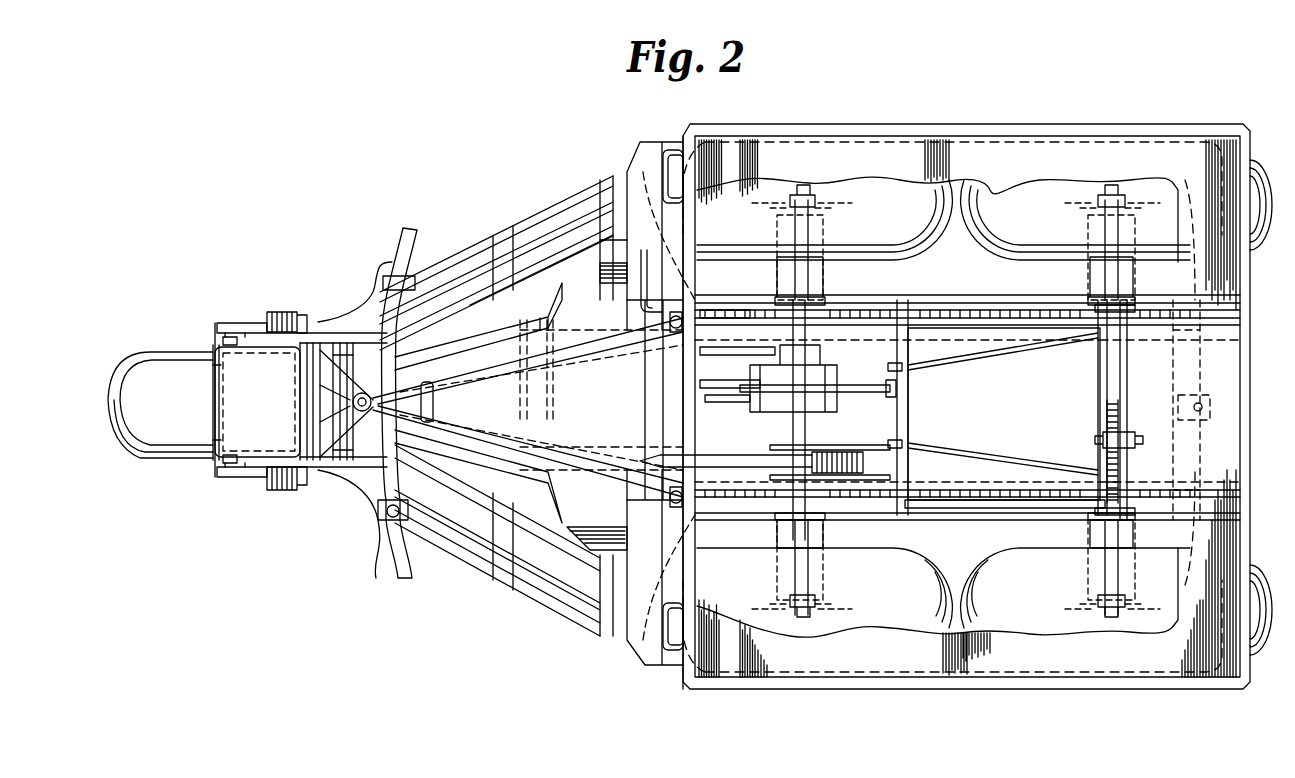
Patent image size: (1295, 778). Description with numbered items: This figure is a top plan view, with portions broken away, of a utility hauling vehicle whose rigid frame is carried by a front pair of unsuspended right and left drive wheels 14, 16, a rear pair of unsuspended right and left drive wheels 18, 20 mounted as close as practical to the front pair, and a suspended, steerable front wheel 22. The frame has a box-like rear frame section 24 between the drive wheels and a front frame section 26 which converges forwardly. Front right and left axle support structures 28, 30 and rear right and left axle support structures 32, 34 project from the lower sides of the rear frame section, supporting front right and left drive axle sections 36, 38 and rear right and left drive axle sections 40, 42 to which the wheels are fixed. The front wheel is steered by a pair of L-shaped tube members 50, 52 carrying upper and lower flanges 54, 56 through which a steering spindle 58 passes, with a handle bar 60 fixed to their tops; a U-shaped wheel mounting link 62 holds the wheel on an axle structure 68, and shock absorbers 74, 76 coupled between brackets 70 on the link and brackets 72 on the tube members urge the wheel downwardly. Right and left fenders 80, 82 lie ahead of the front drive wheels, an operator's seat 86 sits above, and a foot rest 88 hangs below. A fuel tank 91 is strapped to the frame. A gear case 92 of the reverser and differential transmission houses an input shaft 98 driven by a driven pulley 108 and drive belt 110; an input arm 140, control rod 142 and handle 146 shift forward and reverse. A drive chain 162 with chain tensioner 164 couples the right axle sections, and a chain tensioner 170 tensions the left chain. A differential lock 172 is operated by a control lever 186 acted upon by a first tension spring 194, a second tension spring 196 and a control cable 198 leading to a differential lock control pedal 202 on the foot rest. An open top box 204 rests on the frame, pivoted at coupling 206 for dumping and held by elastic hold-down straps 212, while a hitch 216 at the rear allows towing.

The right front drive wheel 14 is at (915, 214).
The left front drive wheel 16 is at (915, 621).
The right rear drive wheel 18 is at (1024, 221).
The left rear drive wheel 20 is at (1003, 621).
The front wheel 22 is at (170, 399).
The rear frame section 24 is at (1030, 298).
The front frame section 26 is at (514, 325).
The front right axle support structure 28 is at (830, 295).
The front left axle support structure 30 is at (823, 530).
The rear right axle support structure 32 is at (1092, 290).
The rear left axle support structure 34 is at (1090, 520).
The front right drive axle section 36 is at (777, 237).
The front left drive axle section 38 is at (790, 560).
The rear right drive axle section 40 is at (1125, 245).
The rear left drive axle section 42 is at (1122, 540).
The L-shaped tube member 50 is at (343, 334).
The L-shaped tube member 52 is at (333, 470).
The upper flange 54 is at (338, 420).
The lower flange 56 is at (352, 402).
The steering spindle 58 is at (340, 385).
The handle bar 60 is at (388, 298).
The wheel mounting link 62 is at (316, 303).
The axle structure 68 is at (185, 428).
The brackets 70 is at (268, 330).
The brackets 72 is at (300, 343).
The shock absorber 74 is at (287, 310).
The shock absorber 76 is at (272, 492).
The right fender 80 is at (640, 207).
The left fender 82 is at (630, 645).
The operator's seat 86 is at (592, 417).
The foot rest 88 is at (458, 270).
The fuel tank 91 is at (1024, 414).
The gear case 92 is at (836, 415).
The input shaft 98 is at (802, 433).
The driven pulley 108 is at (868, 455).
The drive belt 110 is at (695, 447).
The input arm 140 is at (806, 375).
The control rod 142 is at (748, 310).
The handle 146 is at (607, 245).
The drive chain 162 is at (872, 310).
The chain tensioner 164 is at (950, 306).
The chain tensioner 170 is at (938, 515).
The differential lock 172 is at (1098, 424).
The control lever 186 is at (1118, 440).
The first tension spring 194 is at (1120, 476).
The second tension spring 196 is at (1116, 410).
The control cable 198 is at (884, 330).
The differential lock control pedal 202 is at (555, 300).
The open top box 204 is at (946, 689).
The pivot coupling 206 is at (1188, 198).
The elastic hold-down straps 212 is at (665, 352).
The hitch 216 is at (1200, 430).